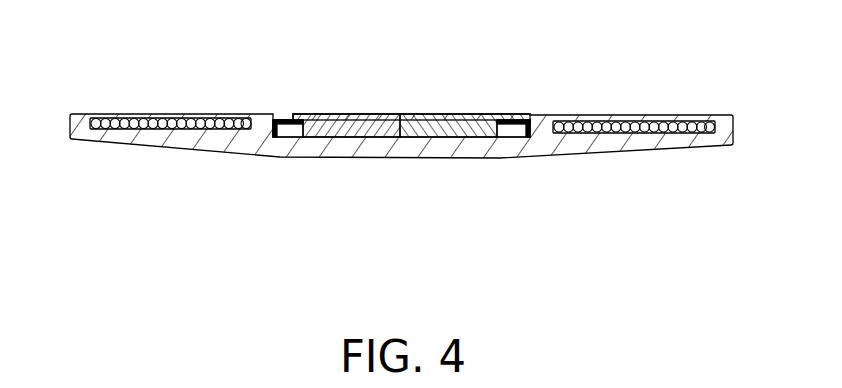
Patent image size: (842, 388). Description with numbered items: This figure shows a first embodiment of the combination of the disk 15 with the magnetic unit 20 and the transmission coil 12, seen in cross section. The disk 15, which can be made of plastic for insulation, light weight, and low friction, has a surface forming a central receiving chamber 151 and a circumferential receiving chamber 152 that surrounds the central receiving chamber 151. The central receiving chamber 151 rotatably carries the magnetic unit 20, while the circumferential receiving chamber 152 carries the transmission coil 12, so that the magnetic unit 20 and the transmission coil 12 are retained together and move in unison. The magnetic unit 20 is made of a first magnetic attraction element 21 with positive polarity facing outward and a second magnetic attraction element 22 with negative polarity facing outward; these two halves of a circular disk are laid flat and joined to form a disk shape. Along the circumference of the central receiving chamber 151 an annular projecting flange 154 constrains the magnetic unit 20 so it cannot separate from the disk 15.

The disk 15 is at (365, 158).
The central receiving chamber 151 is at (494, 118).
The circumferential receiving chamber 152 is at (99, 114).
The transmission coil 12 is at (157, 114).
The projecting flange 154 is at (284, 118).
The magnetic unit 20 is at (411, 68).
The first magnetic attraction element 21 is at (367, 114).
The second magnetic attraction element 22 is at (440, 114).